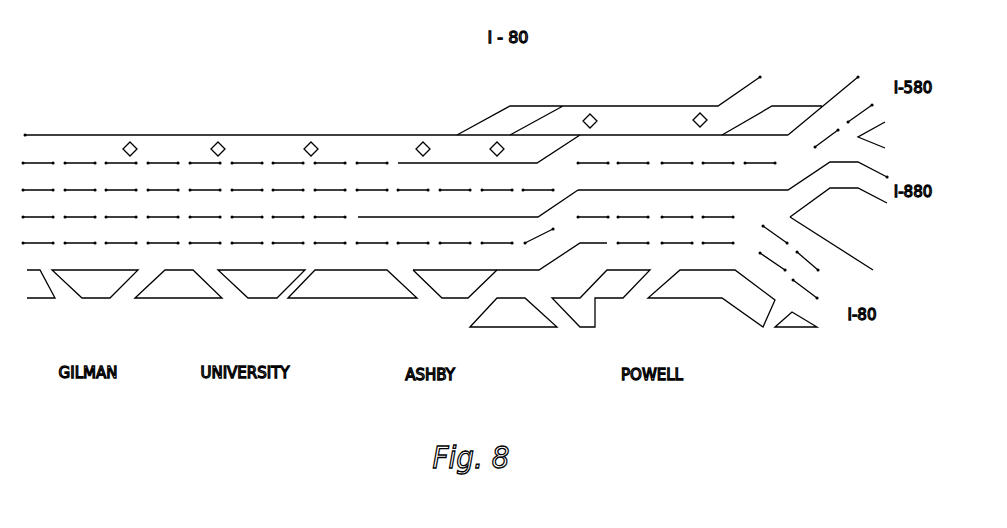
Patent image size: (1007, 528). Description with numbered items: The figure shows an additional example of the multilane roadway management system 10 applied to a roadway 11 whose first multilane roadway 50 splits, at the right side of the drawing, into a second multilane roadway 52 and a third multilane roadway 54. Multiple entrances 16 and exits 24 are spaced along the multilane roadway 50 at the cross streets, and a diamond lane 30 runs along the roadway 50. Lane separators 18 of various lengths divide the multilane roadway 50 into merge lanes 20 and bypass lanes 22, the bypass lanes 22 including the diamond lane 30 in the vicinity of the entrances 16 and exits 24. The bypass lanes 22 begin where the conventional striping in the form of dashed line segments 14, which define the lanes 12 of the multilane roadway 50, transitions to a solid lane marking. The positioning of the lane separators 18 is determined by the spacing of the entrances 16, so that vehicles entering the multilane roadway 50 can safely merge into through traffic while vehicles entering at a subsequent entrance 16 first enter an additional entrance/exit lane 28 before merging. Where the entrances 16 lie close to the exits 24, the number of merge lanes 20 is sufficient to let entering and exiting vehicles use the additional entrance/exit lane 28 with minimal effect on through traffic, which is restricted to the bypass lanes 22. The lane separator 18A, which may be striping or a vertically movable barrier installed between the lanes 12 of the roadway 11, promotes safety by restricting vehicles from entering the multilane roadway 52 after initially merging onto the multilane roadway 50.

The multilane roadway management system 10 is at (345, 72).
The roadway 11 is at (180, 132).
The lanes 12 is at (132, 203).
The dashed line segments 14 is at (290, 190).
The entrances 16 is at (135, 285).
The lane separators 18 is at (440, 163).
The lane separator 18A is at (700, 190).
The merge lanes 20 is at (378, 242).
The bypass lanes 22 is at (399, 190).
The exits 24 is at (228, 288).
The additional entrance/exit lane 28 is at (573, 256).
The diamond lane 30 is at (415, 135).
The first multilane roadway 50 is at (462, 201).
The second multilane roadway 52 is at (861, 123).
The third multilane roadway 54 is at (838, 192).